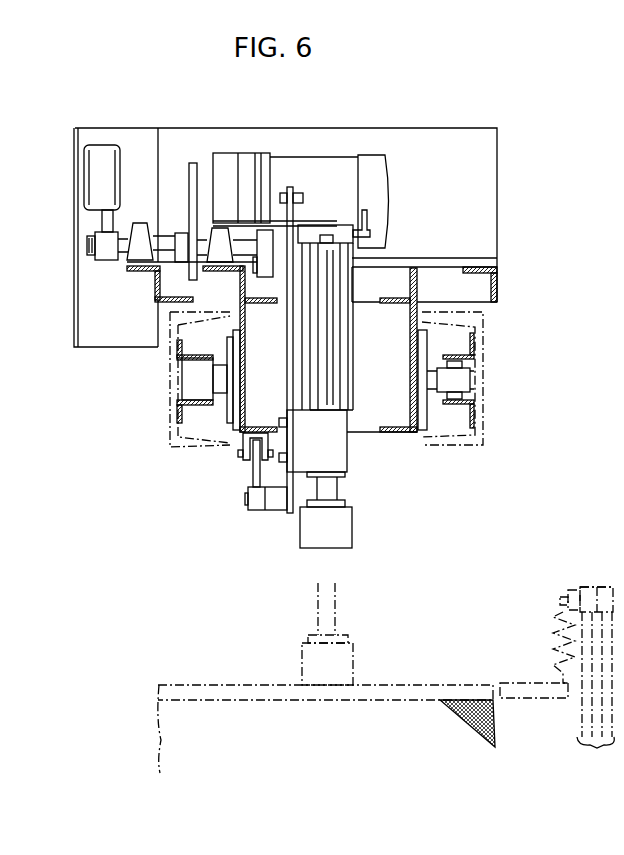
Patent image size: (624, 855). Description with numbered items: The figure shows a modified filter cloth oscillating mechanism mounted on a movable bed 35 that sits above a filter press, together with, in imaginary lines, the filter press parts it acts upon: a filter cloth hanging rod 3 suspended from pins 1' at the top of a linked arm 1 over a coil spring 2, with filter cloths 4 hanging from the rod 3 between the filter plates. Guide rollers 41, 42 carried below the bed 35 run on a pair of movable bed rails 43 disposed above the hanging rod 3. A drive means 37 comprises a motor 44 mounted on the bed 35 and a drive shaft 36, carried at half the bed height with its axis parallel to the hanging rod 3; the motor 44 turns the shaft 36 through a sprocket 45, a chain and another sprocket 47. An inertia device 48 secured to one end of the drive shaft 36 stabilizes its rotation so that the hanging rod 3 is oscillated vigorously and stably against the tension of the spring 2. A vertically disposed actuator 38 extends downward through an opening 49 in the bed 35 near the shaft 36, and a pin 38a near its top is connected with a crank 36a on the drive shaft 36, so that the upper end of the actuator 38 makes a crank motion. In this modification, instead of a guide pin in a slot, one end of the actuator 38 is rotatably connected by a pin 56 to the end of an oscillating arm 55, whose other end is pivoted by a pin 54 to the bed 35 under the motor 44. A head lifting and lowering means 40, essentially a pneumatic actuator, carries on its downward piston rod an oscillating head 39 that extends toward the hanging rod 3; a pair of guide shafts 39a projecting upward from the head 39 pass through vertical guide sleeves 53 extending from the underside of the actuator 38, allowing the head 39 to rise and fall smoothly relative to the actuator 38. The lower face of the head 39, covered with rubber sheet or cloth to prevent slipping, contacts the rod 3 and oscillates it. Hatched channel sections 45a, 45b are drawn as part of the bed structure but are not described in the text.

The linked arm 1 is at (587, 679).
The pin 1' is at (580, 569).
The coil spring 2 is at (562, 650).
The filter cloth hanging rod 3 is at (432, 683).
The filter cloth 4 is at (497, 737).
The movable bed 35 is at (506, 203).
The drive shaft 36 is at (165, 240).
The crank 36a is at (262, 278).
The drive means 37 is at (230, 103).
The actuator 38 is at (287, 369).
The pin 38a is at (262, 256).
The oscillating head 39 is at (351, 530).
The guide shaft 39a is at (332, 373).
The head lifting and lowering means 40 is at (347, 352).
The guide roller 41 is at (189, 376).
The guide roller 42 is at (470, 380).
The movable bed rail 43 is at (193, 406).
The motor 44 is at (227, 157).
The sprocket 45 is at (197, 165).
The channel bracket 45a is at (243, 384).
The channel bracket 45b is at (415, 389).
The sprocket 47 is at (187, 279).
The inertia device 48 is at (92, 173).
The opening 49 is at (385, 282).
The guide sleeve 53 is at (345, 457).
The pin 54 is at (239, 455).
The oscillating arm 55 is at (252, 478).
The pin 56 is at (245, 499).